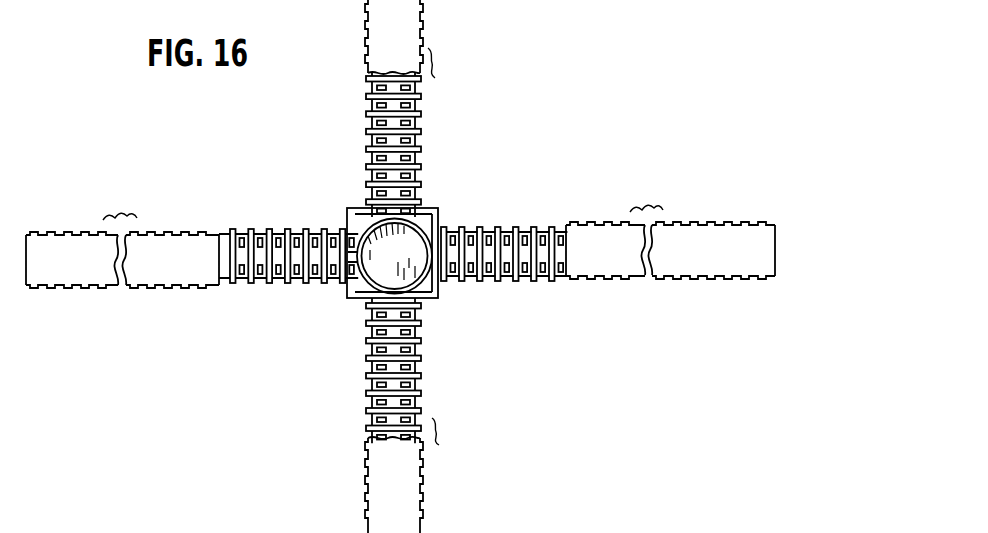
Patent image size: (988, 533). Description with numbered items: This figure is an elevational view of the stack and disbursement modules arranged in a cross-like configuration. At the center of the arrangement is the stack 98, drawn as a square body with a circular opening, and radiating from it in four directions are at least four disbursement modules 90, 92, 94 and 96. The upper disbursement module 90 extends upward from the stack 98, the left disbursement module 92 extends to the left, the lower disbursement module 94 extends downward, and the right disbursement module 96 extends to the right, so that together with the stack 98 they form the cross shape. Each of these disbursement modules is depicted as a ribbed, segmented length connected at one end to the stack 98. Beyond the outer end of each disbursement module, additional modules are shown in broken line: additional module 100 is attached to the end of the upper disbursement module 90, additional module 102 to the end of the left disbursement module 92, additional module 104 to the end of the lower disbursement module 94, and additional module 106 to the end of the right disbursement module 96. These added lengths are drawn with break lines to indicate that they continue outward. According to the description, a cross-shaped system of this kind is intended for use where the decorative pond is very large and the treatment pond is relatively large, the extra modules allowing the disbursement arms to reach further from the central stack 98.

The stack 98 is at (444, 205).
The disbursement module 90 is at (422, 128).
The disbursement module 92 is at (250, 228).
The disbursement module 94 is at (422, 375).
The disbursement module 96 is at (513, 228).
The additional module 100 is at (426, 5).
The additional module 102 is at (196, 228).
The additional module 104 is at (457, 455).
The additional module 106 is at (692, 219).